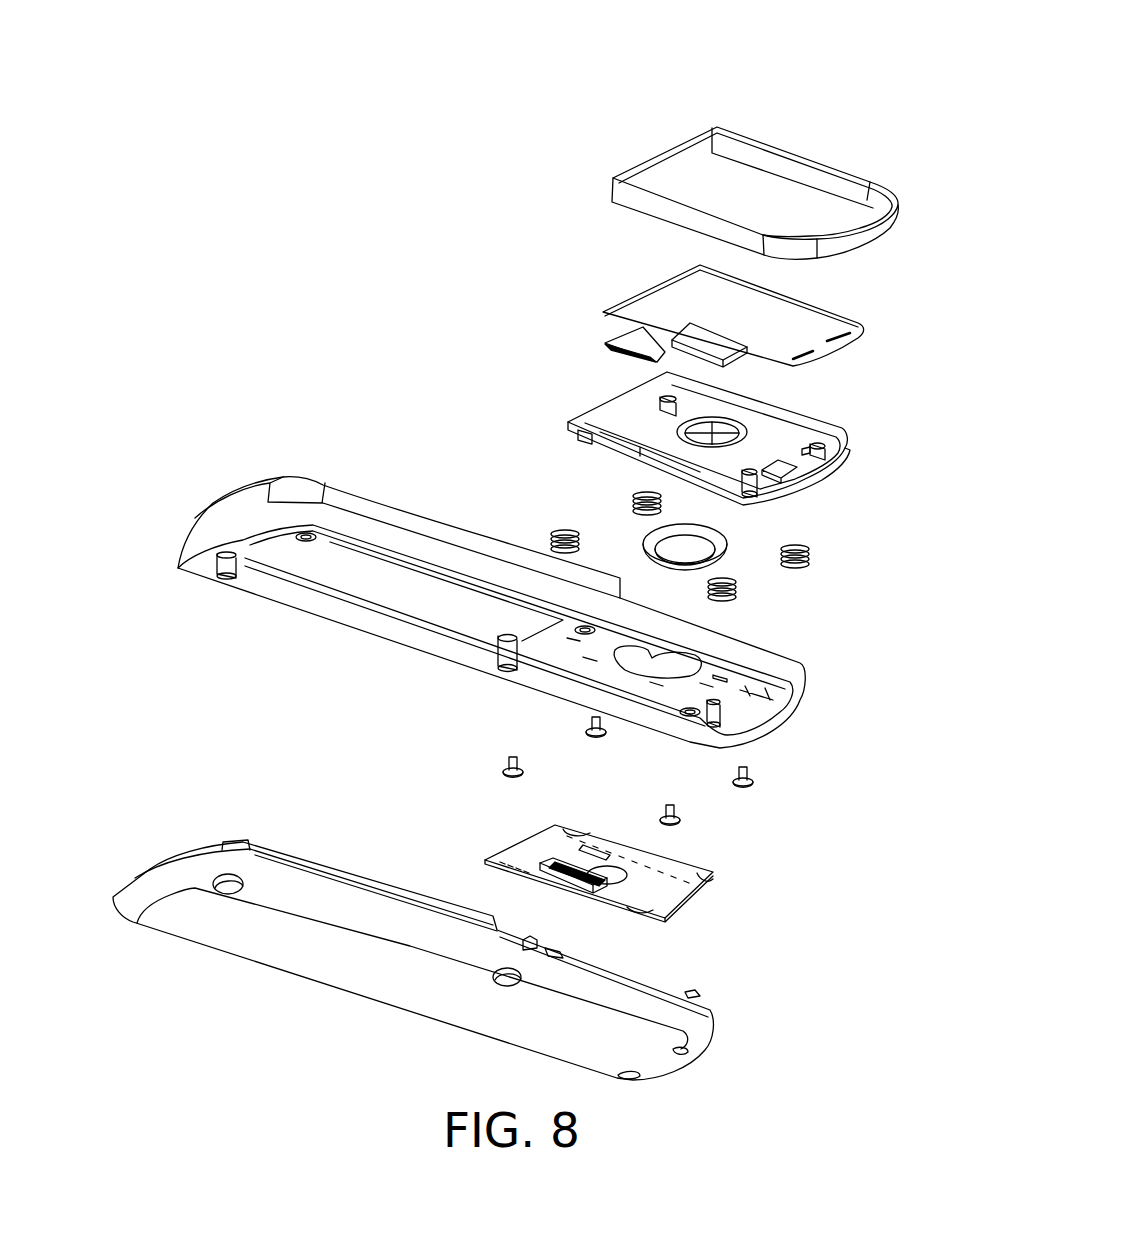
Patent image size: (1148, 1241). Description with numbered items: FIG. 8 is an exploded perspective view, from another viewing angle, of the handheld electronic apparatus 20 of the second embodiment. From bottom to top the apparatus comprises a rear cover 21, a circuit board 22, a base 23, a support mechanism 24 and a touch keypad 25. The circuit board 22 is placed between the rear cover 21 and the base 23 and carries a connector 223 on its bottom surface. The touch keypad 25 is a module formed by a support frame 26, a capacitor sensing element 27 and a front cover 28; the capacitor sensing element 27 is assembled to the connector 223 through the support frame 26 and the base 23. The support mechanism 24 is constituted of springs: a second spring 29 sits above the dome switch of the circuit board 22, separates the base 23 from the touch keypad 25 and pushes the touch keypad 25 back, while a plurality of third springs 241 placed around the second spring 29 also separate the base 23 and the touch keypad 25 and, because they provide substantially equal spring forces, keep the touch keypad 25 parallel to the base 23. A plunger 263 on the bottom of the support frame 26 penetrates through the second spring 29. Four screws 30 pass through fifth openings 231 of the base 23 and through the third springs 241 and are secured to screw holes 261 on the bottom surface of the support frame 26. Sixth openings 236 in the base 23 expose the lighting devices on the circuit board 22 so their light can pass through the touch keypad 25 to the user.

The handheld electronic apparatus 20 is at (830, 101).
The rear cover 21 is at (708, 1027).
The circuit board 22 is at (638, 890).
The connector 223 is at (597, 895).
The base 23 is at (795, 681).
The fifth openings 231 is at (778, 708).
The sixth openings 236 is at (728, 675).
The support mechanism 24 is at (800, 573).
The third springs 241 is at (810, 553).
The touch keypad 25 is at (505, 152).
The support frame 26 is at (569, 423).
The screw holes 261 is at (818, 465).
The plunger 263 is at (744, 436).
The capacitor sensing element 27 is at (604, 313).
The front cover 28 is at (614, 181).
The second spring 29 is at (728, 541).
The screws 30 is at (752, 772).